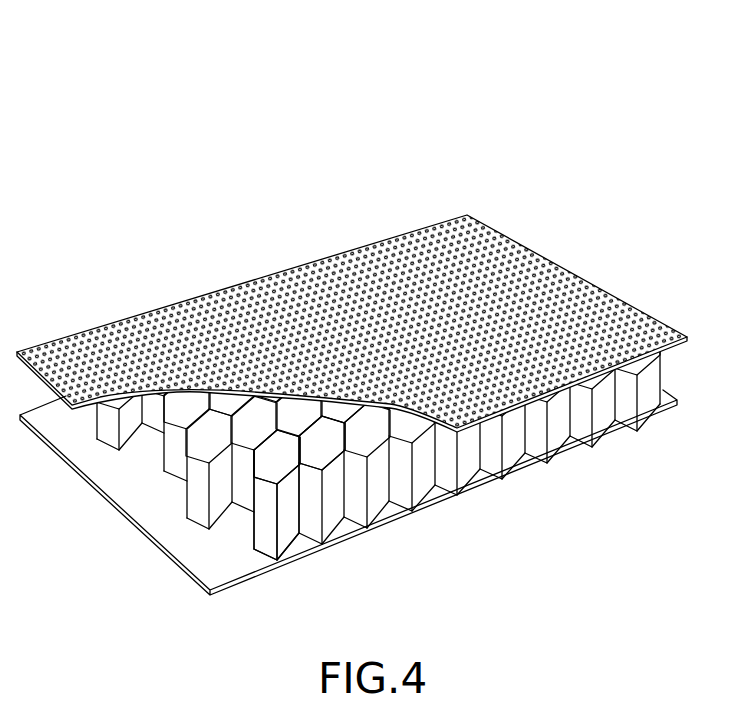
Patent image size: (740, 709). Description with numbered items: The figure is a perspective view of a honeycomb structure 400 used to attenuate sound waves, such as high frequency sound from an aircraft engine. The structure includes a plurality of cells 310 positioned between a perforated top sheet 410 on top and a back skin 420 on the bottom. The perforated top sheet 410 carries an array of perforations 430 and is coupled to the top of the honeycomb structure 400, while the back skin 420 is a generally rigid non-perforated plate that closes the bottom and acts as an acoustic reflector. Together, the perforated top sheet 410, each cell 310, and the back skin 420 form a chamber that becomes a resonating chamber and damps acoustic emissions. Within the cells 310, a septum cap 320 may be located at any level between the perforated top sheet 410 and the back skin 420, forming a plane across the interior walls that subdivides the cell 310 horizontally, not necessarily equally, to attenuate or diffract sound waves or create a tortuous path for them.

The honeycomb structure 400 is at (492, 120).
The perforated top sheet 410 is at (318, 266).
The perforations 430 is at (571, 296).
The cells 310 is at (423, 478).
The septum cap 320 is at (280, 532).
The back skin 420 is at (167, 550).